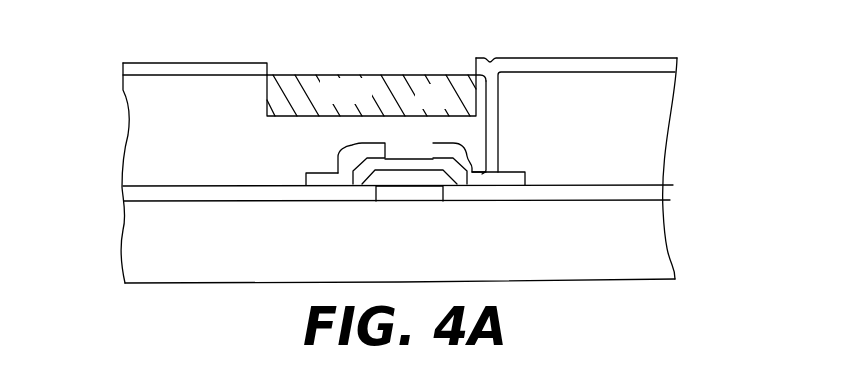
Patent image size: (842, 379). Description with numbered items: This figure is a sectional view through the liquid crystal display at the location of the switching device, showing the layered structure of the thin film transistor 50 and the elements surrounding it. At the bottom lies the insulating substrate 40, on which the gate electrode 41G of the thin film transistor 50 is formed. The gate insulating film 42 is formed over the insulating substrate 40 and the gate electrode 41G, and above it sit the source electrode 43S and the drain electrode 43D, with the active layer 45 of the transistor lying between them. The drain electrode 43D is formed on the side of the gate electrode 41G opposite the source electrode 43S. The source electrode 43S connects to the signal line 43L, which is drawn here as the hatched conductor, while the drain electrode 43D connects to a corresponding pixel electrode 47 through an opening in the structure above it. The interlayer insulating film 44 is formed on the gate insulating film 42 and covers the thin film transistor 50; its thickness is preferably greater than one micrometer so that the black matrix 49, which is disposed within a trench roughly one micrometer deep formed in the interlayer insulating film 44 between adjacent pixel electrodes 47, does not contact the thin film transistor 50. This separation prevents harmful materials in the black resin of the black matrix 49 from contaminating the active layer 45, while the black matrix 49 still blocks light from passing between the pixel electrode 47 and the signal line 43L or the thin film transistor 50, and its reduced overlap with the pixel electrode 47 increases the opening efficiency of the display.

The insulating substrate 40 is at (653, 239).
The gate electrode 41G is at (410, 194).
The gate insulating film 42 is at (670, 187).
The signal line 43L is at (322, 184).
The source electrode 43S is at (346, 153).
The drain electrode 43D is at (483, 184).
The interlayer insulating film 44 is at (137, 153).
The active layer 45 is at (402, 161).
The pixel electrode 47 is at (200, 70).
The black matrix 49 is at (311, 88).
The thin film transistor 50 is at (304, 153).